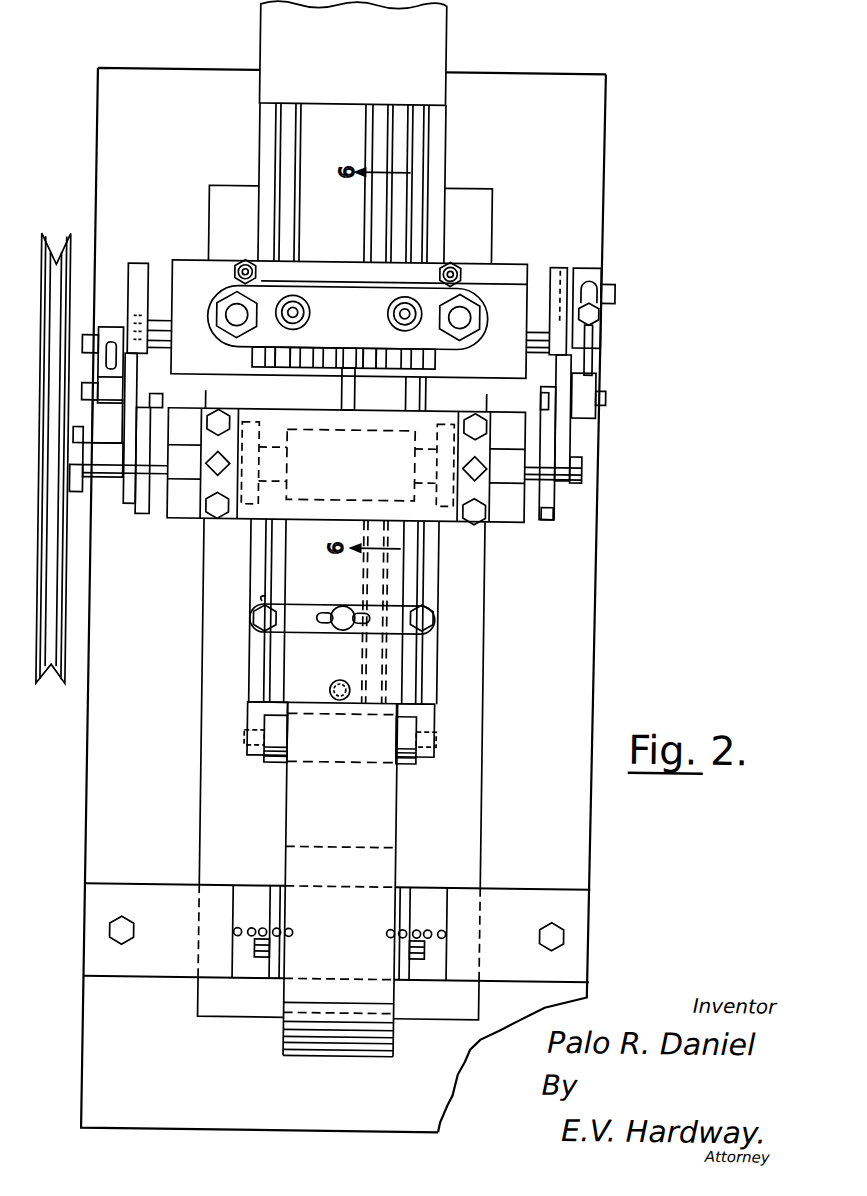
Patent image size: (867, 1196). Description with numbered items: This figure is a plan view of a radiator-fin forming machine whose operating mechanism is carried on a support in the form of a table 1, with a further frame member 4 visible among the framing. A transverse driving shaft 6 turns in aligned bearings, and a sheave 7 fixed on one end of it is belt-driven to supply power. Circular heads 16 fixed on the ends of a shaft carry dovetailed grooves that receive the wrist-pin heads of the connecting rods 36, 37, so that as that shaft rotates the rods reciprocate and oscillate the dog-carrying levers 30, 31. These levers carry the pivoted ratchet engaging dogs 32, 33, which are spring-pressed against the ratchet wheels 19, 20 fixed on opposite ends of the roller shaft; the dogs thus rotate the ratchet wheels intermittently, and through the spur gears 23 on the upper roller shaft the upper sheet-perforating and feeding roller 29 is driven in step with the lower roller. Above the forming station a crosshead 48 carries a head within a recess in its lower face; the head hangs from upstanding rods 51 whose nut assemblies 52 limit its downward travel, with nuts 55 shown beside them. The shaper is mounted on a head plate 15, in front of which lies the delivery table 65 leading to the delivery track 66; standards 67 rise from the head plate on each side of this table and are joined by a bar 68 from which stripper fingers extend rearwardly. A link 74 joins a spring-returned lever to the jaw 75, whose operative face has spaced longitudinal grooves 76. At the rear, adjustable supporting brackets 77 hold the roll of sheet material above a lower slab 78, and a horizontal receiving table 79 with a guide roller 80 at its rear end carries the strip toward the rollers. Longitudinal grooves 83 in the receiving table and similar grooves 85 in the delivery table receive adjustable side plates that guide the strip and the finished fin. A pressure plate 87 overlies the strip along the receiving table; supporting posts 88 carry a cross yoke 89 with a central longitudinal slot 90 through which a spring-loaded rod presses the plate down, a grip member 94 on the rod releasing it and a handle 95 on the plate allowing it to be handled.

The table 1 is at (596, 572).
The carriage block 4 is at (182, 515).
The transverse driving shaft 6 is at (102, 482).
The sheave 7 is at (48, 266).
The head plate 15 is at (528, 270).
The circular heads 16 is at (567, 268).
The ratchet wheel 19 is at (551, 518).
The ratchet wheel 20 is at (139, 512).
The spur gears 23 is at (243, 410).
The upper sheet-perforating and feeding roller 29 is at (285, 498).
The dog-carrying lever 30 is at (572, 440).
The dog-carrying lever 31 is at (127, 433).
The ratchet engaging dog 32 is at (545, 386).
The ratchet engaging dog 33 is at (154, 402).
The connecting rod 36 is at (590, 344).
The connecting rod 37 is at (103, 359).
The crosshead 48 is at (222, 292).
The upstanding rods 51 is at (298, 313).
The nut assemblies 52 is at (287, 318).
The nut 55 is at (232, 318).
The table 65 is at (446, 140).
The delivery track 66 is at (446, 52).
The standards 67 is at (244, 262).
The bar 68 is at (478, 276).
The link 74 is at (343, 390).
The jaw 75 is at (363, 366).
The longitudinal grooves 76 is at (282, 362).
The supporting brackets 77 is at (278, 886).
The lower slab 78 is at (287, 1038).
The receiving table 79 is at (439, 559).
The guide roller 80 is at (408, 766).
The longitudinal grooves 83 is at (423, 592).
The longitudinal grooves 85 is at (277, 132).
The pressure plate 87 is at (295, 563).
The supporting posts 88 is at (253, 627).
The cross yoke 89 is at (262, 602).
The longitudinal slot 90 is at (326, 614).
The grip member 94 is at (343, 630).
The handle 95 is at (332, 686).